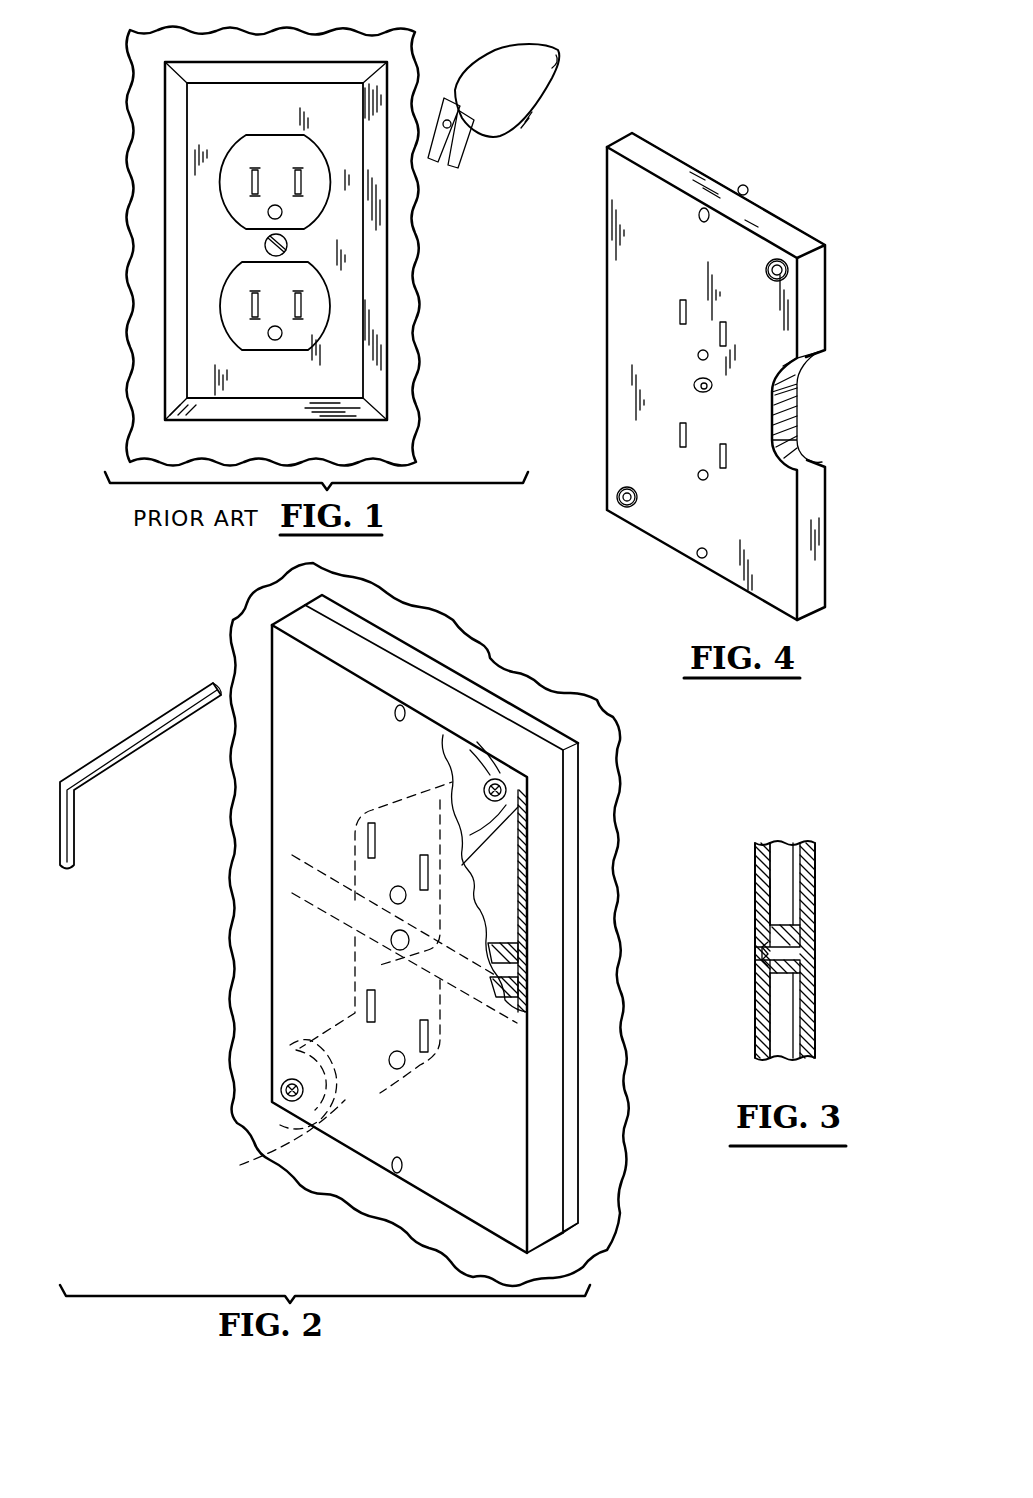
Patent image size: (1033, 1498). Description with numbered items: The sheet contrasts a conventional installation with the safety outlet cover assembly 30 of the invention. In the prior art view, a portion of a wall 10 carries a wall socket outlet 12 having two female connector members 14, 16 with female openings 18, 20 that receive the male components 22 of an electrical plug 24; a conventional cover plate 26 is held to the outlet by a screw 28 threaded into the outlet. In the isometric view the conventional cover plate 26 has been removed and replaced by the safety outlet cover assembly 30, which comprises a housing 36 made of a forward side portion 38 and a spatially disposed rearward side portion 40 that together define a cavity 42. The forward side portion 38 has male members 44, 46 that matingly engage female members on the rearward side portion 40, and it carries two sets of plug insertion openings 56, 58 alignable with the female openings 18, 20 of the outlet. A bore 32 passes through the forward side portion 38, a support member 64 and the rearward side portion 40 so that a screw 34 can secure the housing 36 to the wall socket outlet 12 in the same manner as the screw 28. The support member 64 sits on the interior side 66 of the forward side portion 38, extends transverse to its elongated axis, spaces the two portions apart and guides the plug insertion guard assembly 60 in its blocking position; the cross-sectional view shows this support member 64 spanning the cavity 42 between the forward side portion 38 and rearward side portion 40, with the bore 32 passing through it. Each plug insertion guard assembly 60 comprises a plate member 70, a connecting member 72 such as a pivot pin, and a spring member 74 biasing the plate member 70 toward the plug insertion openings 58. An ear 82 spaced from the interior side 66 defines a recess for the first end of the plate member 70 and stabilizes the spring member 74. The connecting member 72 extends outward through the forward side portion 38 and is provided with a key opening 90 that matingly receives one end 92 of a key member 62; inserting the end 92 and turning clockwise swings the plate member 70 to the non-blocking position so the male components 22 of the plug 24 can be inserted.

In FIG. 1, the wall 10 is at (424, 30).
In FIG. 2, the wall 10 is at (612, 710).
In FIG. 1, the wall socket outlet 12 is at (318, 138).
In FIG. 1, the female connector member 14 is at (246, 147).
In FIG. 1, the female connector member 16 is at (320, 312).
In FIG. 1, the female openings 18 is at (268, 212).
In FIG. 1, the female openings 20 is at (268, 333).
In FIG. 1, the male components 22 is at (449, 145).
In FIG. 1, the electrical plug 24 is at (516, 44).
In FIG. 1, the conventional cover plate 26 is at (158, 82).
In FIG. 1, the screw 28 is at (287, 241).
In FIG. 2, the safety outlet cover assembly 30 is at (594, 805).
In FIG. 3, the safety outlet cover assembly 30 is at (856, 830).
In FIG. 4, the bore 32 is at (714, 386).
In FIG. 3, the bore 32 is at (790, 953).
In FIG. 2, the screw 34 is at (392, 936).
In FIG. 4, the housing 36 is at (856, 222).
In FIG. 2, the housing 36 is at (494, 688).
In FIG. 3, the housing 36 is at (826, 854).
In FIG. 4, the forward side portion 38 is at (832, 303).
In FIG. 2, the forward side portion 38 is at (286, 747).
In FIG. 3, the forward side portion 38 is at (746, 989).
In FIG. 2, the rearward side portion 40 is at (596, 922).
In FIG. 3, the rearward side portion 40 is at (834, 902).
In FIG. 2, the cavity 42 is at (505, 885).
In FIG. 3, the cavity 42 is at (784, 884).
In FIG. 4, the male member 44 is at (748, 188).
In FIG. 2, the male member 44 is at (404, 706).
In FIG. 4, the male member 46 is at (698, 556).
In FIG. 2, the male member 46 is at (392, 1170).
In FIG. 4, the plug insertion openings 56 is at (698, 355).
In FIG. 2, the plug insertion openings 56 is at (398, 886).
In FIG. 4, the plug insertion openings 58 is at (698, 476).
In FIG. 2, the plug insertion openings 58 is at (405, 1062).
In FIG. 2, the plug insertion guard assembly 60 is at (500, 846).
In FIG. 2, the key member 62 is at (124, 762).
In FIG. 4, the support member 64 is at (812, 405).
In FIG. 2, the support member 64 is at (508, 988).
In FIG. 3, the support member 64 is at (812, 932).
In FIG. 4, the interior side 66 is at (800, 375).
In FIG. 3, the interior side 66 is at (778, 866).
In FIG. 2, the plate member 70 is at (445, 800).
In FIG. 4, the connecting member 72 is at (788, 272).
In FIG. 2, the connecting member 72 is at (506, 783).
In FIG. 2, the spring member 74 is at (478, 742).
In FIG. 2, the ear 82 is at (288, 1045).
In FIG. 4, the key opening 90 is at (780, 262).
In FIG. 2, the key opening 90 is at (508, 788).
In FIG. 2, the end 92 is at (190, 694).